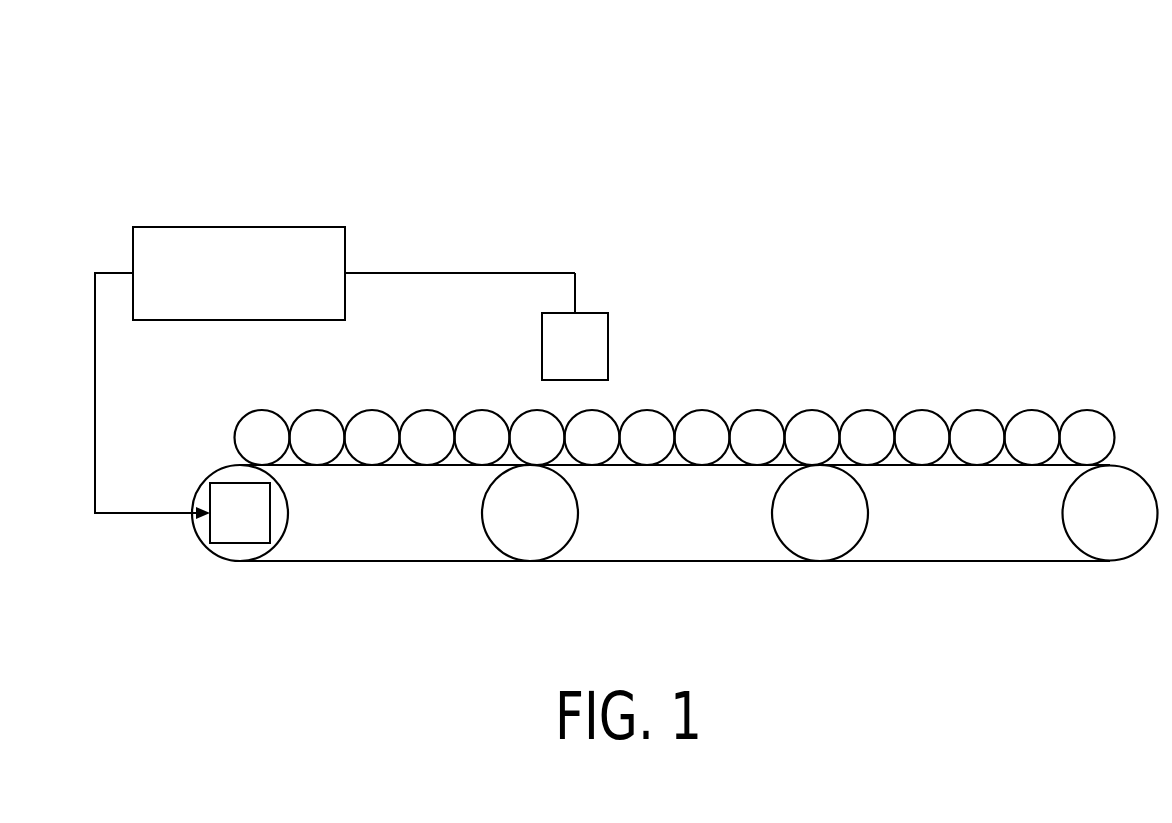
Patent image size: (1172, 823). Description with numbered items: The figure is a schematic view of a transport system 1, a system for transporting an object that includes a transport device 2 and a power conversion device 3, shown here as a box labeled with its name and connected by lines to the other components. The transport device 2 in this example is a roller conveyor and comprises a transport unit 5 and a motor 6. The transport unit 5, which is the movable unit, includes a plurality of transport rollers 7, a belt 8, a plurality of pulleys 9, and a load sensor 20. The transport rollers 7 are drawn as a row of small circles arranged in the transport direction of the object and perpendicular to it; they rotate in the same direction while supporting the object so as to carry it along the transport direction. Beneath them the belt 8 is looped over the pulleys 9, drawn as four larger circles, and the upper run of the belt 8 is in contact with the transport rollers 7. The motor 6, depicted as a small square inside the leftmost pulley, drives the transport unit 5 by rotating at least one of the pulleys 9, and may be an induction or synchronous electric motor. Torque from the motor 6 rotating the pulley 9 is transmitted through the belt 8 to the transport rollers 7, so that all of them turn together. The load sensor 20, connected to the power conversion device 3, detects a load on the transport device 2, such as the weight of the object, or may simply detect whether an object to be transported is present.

The transport system 1 is at (1099, 137).
The transport device 2 is at (1056, 250).
The power conversion device 3 is at (283, 226).
The transport unit 5 is at (1080, 335).
The motor 6 is at (230, 482).
The transport rollers 7 is at (1030, 410).
The belt 8 is at (970, 562).
The pulleys 9 is at (283, 537).
The load sensor 20 is at (590, 312).